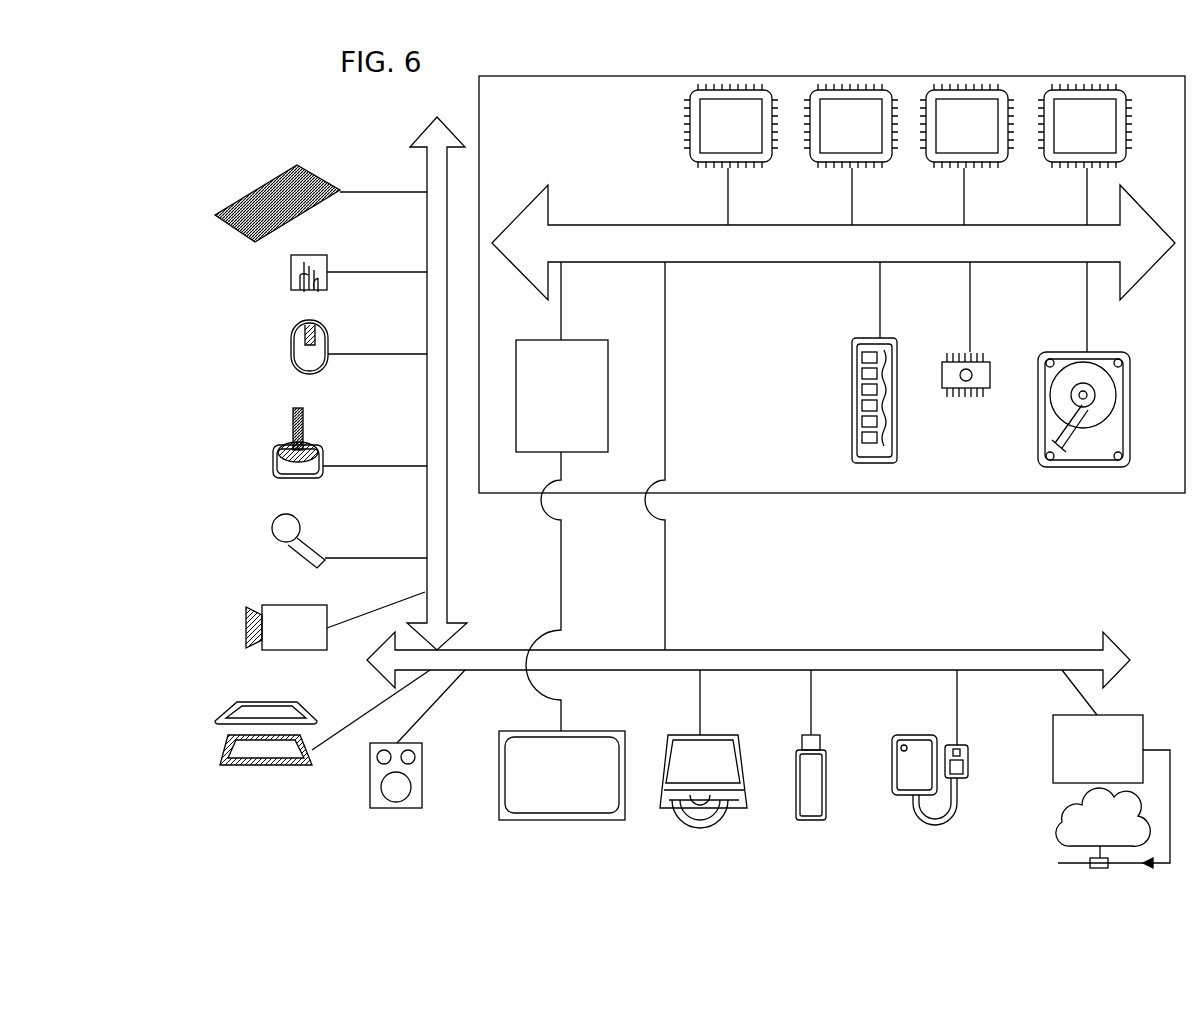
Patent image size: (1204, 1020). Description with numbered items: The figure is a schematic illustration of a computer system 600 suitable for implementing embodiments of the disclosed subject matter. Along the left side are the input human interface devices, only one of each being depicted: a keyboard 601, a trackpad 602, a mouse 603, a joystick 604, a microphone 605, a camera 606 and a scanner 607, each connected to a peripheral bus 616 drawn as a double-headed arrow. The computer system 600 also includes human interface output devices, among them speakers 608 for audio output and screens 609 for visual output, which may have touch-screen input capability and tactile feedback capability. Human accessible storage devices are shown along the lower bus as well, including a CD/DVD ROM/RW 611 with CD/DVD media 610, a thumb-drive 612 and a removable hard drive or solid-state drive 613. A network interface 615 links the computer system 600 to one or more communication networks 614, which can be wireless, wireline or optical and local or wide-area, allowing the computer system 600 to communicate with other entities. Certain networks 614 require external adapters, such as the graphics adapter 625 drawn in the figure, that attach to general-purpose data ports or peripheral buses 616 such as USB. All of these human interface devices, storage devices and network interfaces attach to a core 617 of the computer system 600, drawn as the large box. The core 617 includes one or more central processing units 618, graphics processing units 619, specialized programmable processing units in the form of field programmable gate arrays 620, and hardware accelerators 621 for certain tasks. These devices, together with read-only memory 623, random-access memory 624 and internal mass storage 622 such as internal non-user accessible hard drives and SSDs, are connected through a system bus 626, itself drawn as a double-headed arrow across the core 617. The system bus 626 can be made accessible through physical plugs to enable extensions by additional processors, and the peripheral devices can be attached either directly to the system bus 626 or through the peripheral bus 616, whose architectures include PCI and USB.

The computer system 600 is at (238, 104).
The keyboard 601 is at (218, 222).
The trackpad 602 is at (290, 283).
The mouse 603 is at (287, 350).
The joystick 604 is at (272, 462).
The microphone 605 is at (273, 526).
The camera 606 is at (246, 628).
The scanner 607 is at (222, 748).
The speakers 608 is at (400, 818).
The touch-screen 609 is at (560, 820).
The CD/DVD media 610 is at (683, 812).
The CD/DVD ROM/RW 611 is at (735, 812).
The thumb-drive 612 is at (806, 820).
The removable hard drive or solid-state drive 613 is at (892, 795).
The communication networks 614 is at (1060, 830).
The network interface 615 is at (1111, 769).
The peripheral bus 616 is at (417, 150).
The core 617 is at (827, 493).
The central processing unit 618 is at (731, 154).
The graphics processing unit 619 is at (851, 154).
The field programmable gate array 620 is at (967, 154).
The hardware accelerator 621 is at (1085, 154).
The internal mass storage 622 is at (1053, 332).
The read-only memory 623 is at (952, 393).
The random-access memory 624 is at (852, 398).
The graphics adapter 625 is at (562, 496).
The system bus 626 is at (833, 242).